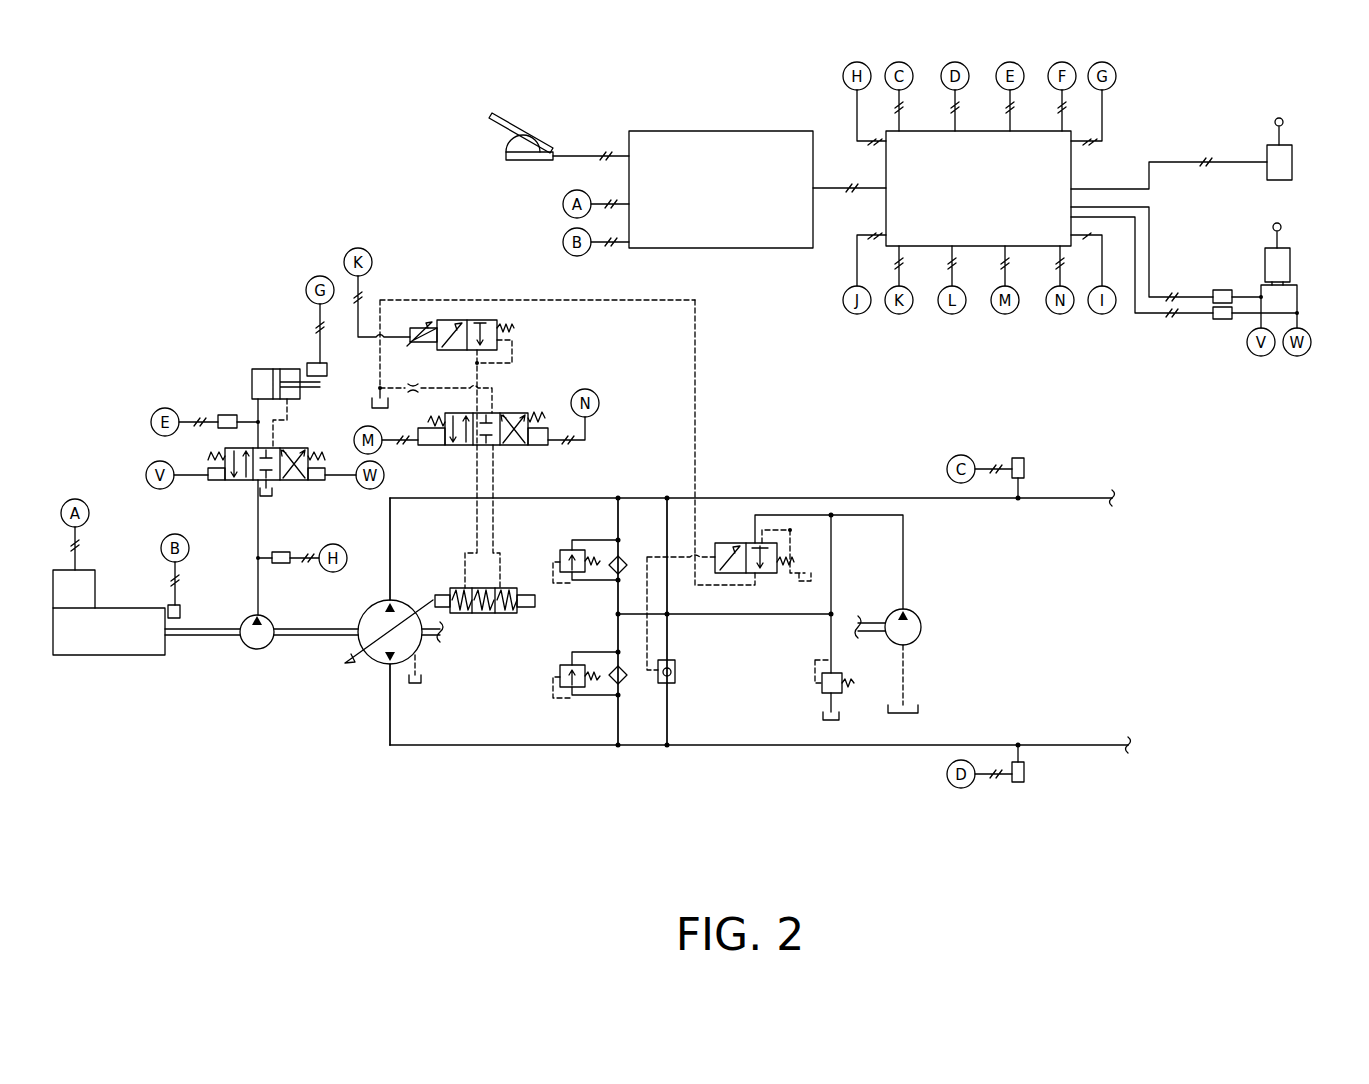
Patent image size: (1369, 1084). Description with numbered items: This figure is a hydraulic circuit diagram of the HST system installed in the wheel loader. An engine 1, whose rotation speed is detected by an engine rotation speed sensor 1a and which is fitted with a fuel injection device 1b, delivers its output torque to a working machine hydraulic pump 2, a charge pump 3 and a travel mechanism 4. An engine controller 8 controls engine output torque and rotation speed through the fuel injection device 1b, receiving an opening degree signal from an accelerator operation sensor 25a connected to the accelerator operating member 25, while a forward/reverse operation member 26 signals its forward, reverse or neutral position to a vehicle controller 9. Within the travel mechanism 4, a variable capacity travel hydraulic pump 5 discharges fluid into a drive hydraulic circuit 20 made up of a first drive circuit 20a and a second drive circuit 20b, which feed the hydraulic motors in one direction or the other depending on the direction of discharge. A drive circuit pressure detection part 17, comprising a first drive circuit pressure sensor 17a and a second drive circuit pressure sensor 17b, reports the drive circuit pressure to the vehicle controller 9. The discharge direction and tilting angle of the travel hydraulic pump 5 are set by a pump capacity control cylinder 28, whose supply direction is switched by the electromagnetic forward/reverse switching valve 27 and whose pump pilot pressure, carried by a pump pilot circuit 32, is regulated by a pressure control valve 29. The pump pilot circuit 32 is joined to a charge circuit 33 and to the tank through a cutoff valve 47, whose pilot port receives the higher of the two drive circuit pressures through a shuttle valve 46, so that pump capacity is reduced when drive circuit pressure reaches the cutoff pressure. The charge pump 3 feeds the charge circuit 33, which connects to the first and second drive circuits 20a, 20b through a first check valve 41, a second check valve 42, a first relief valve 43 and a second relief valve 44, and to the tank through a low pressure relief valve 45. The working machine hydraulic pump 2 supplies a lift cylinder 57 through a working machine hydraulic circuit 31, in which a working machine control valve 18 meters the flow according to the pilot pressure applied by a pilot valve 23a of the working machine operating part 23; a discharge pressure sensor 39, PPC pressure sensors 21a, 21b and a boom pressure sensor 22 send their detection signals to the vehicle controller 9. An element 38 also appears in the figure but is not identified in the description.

The engine 1 is at (113, 658).
The engine rotation speed sensor 1a is at (182, 611).
The fuel injection device 1b is at (99, 591).
The working machine hydraulic pump 2 is at (265, 615).
The charge pump 3 is at (908, 610).
The travel mechanism 4 is at (349, 720).
The travel hydraulic pump 5 is at (404, 602).
The engine controller 8 is at (720, 131).
The vehicle controller 9 is at (886, 210).
The drive circuit pressure detection part 17 is at (997, 441).
The first drive circuit pressure sensor 17a is at (1018, 457).
The second drive circuit pressure sensor 17b is at (1018, 783).
The working machine control valve 18 is at (304, 482).
The drive hydraulic circuit 20 is at (1067, 462).
The first drive circuit 20a is at (850, 496).
The second drive circuit 20b is at (776, 748).
The PPC pressure sensor 21a is at (1222, 290).
The PPC pressure sensor 21b is at (1222, 320).
The boom pressure sensor 22 is at (218, 414).
The working machine operating part 23 is at (1282, 236).
The pilot valve 23a is at (1292, 264).
The accelerator operating member 25 is at (530, 130).
The accelerator operation sensor 25a is at (506, 156).
The forward/reverse operation member 26 is at (1265, 132).
The forward/reverse switching valve 27 is at (508, 448).
The pump capacity control cylinder 28 is at (510, 616).
The pressure control valve 29 is at (455, 318).
The working machine hydraulic circuit 31 is at (258, 512).
The pump pilot circuit 32 is at (594, 302).
The charge circuit 33 is at (764, 622).
The cylinder position sensor 38 is at (305, 362).
The discharge pressure sensor 39 is at (284, 551).
The first check valve 41 is at (626, 557).
The second check valve 42 is at (626, 682).
The first relief valve 43 is at (566, 574).
The second relief valve 44 is at (566, 664).
The low pressure relief valve 45 is at (815, 693).
The shuttle valve 46 is at (675, 680).
The cutoff valve 47 is at (732, 540).
The lift cylinder 57 is at (257, 368).